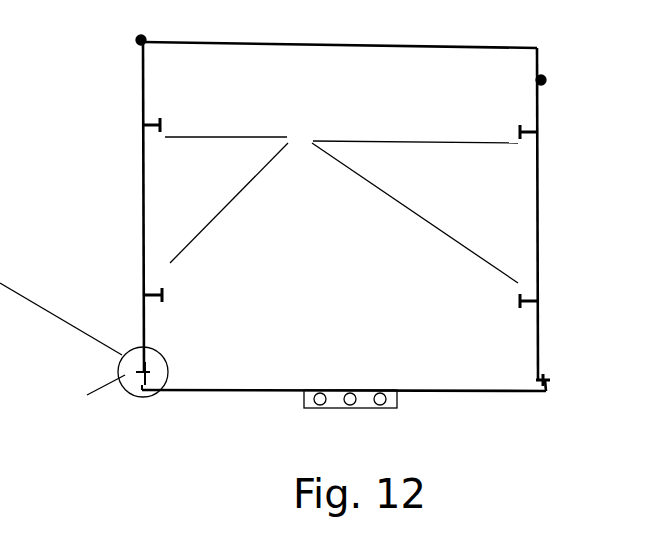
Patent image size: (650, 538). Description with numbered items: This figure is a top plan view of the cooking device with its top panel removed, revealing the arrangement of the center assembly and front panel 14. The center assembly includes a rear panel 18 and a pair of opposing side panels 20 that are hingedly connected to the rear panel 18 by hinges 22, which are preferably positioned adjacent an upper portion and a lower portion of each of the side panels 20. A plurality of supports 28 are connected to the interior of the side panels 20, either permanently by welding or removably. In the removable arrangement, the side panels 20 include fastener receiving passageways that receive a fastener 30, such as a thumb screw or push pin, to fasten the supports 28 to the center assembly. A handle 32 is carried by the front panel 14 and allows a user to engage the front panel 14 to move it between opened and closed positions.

The front panel 14 is at (226, 392).
The rear panel 18 is at (443, 44).
The side panels 20 is at (143, 189).
The hinges 22 is at (136, 38).
The supports 28 is at (341, 206).
The fastener 30 is at (548, 383).
The handle 32 is at (385, 407).